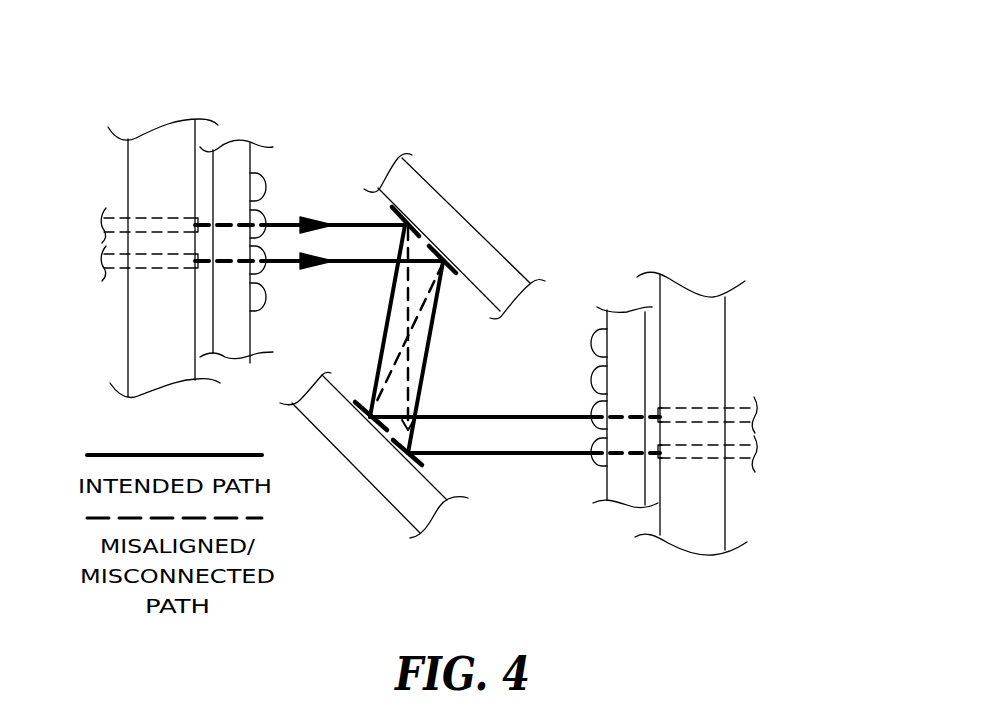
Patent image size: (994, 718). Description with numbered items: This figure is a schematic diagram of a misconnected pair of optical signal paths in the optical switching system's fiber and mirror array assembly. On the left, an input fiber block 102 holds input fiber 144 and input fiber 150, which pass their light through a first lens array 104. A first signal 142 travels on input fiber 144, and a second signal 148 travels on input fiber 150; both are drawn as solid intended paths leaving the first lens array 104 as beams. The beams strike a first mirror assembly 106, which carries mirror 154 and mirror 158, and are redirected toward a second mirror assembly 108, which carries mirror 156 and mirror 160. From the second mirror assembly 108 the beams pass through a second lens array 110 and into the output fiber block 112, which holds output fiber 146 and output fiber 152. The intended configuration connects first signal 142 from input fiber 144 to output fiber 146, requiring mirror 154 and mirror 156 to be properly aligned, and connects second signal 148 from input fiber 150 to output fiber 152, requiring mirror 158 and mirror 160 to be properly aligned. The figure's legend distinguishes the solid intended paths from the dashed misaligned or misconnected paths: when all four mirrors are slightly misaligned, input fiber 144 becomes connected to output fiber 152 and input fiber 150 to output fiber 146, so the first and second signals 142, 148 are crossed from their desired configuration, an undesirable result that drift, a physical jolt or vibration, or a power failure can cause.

The input fiber block 102 is at (152, 140).
The first lens array 104 is at (237, 153).
The first mirror assembly 106 is at (424, 190).
The second mirror assembly 108 is at (388, 486).
The second lens array 110 is at (615, 315).
The output fiber block 112 is at (708, 318).
The first signal 142 is at (288, 220).
The input fiber 144 is at (128, 219).
The output fiber 146 is at (735, 412).
The second signal 148 is at (277, 258).
The input fiber 150 is at (128, 267).
The output fiber 152 is at (732, 452).
The mirror 154 is at (380, 186).
The mirror 156 is at (377, 425).
The mirror 158 is at (458, 270).
The mirror 160 is at (423, 462).